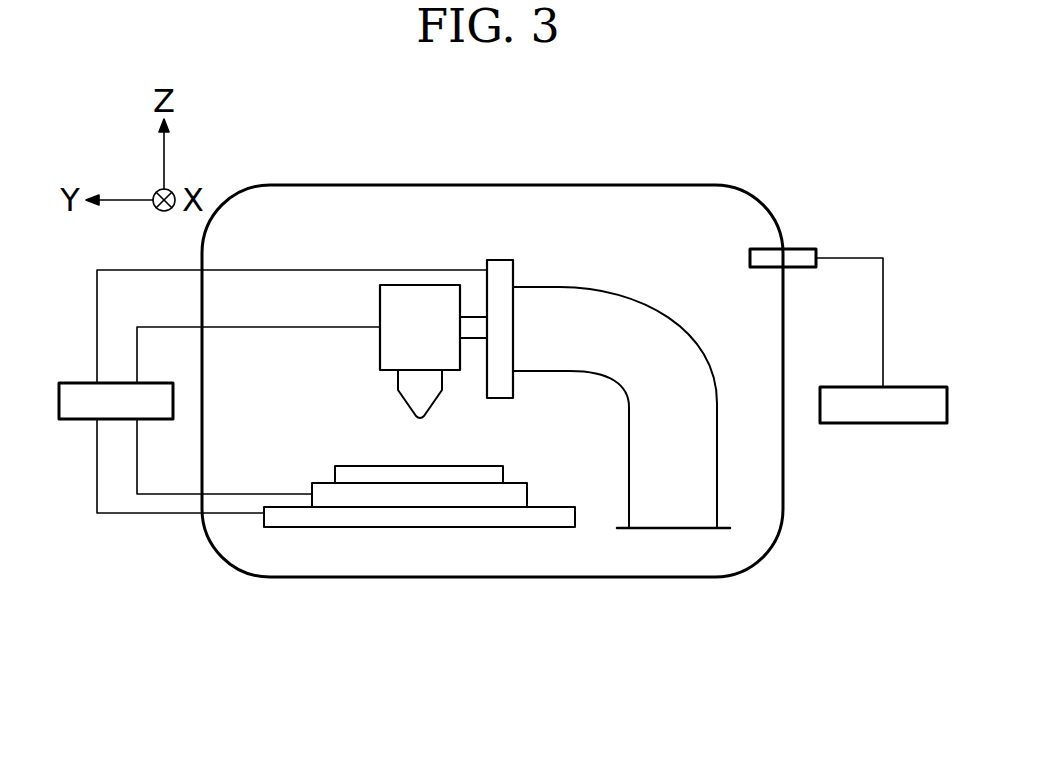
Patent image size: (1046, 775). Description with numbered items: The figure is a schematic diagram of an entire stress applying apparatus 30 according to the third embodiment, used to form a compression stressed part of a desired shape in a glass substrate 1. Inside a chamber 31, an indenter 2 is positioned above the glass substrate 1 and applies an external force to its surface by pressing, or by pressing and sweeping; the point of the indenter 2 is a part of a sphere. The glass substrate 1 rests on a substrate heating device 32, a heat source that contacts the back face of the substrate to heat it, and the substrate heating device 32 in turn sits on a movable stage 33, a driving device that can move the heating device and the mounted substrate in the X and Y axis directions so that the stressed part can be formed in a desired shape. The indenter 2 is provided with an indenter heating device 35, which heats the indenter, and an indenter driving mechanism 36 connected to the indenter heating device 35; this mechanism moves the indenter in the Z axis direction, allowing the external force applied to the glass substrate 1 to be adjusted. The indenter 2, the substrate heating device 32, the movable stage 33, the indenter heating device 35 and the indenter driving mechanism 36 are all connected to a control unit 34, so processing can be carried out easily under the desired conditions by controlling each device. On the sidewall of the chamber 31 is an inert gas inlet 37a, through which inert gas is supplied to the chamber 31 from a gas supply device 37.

The stress applying apparatus 30 is at (703, 158).
The chamber 31 is at (783, 486).
The glass substrate 1 is at (455, 467).
The indenter 2 is at (412, 393).
The substrate heating device 32 is at (525, 500).
The movable stage 33 is at (515, 518).
The control unit 34 is at (75, 420).
The indenter heating device 35 is at (382, 343).
The indenter driving mechanism 36 is at (497, 260).
The gas supply device 37 is at (917, 387).
The inert gas inlet 37a is at (800, 248).